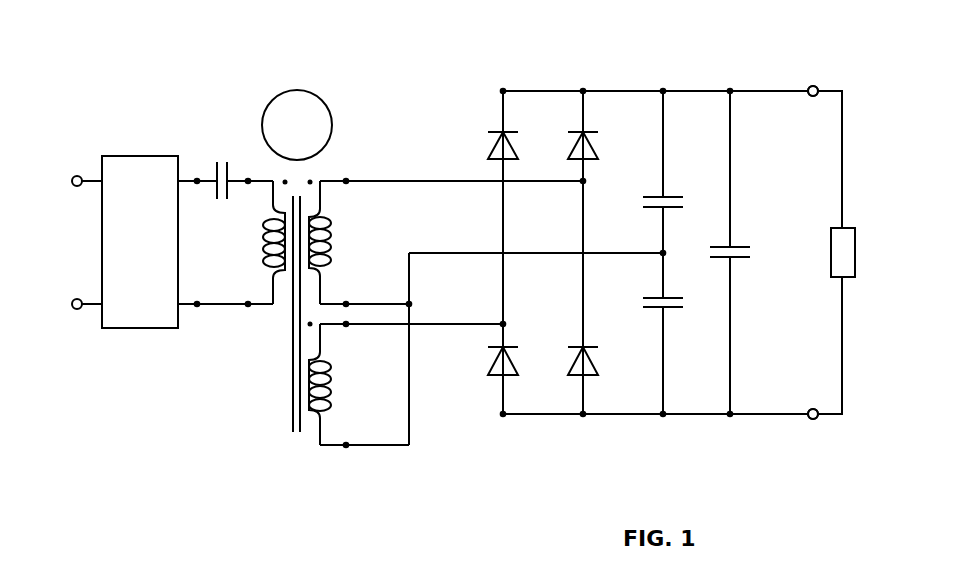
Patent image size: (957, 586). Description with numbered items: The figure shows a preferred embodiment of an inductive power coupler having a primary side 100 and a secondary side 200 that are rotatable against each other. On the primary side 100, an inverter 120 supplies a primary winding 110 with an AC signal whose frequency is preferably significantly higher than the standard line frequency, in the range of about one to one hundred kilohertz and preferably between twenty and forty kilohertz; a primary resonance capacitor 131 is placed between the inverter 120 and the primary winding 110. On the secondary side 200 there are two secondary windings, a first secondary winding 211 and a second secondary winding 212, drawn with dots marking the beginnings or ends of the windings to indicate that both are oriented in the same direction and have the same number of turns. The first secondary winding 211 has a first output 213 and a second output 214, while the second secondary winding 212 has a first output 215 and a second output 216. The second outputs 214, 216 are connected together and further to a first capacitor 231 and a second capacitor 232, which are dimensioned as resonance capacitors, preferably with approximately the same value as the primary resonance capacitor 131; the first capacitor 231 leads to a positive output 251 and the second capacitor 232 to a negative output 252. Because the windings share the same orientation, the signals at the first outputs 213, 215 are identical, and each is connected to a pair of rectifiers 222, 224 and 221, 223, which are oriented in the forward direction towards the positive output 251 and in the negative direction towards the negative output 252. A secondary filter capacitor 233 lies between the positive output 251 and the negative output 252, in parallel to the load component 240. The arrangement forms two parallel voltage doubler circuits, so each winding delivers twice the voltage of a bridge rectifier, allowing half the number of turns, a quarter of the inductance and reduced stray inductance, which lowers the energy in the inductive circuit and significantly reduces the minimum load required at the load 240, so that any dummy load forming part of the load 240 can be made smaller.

The primary side 100 is at (206, 81).
The secondary side 200 is at (388, 83).
The primary winding 110 is at (263, 225).
The inverter 120 is at (138, 181).
The primary resonance capacitor 131 is at (215, 163).
The first secondary winding 211 is at (331, 223).
The second secondary winding 212 is at (331, 404).
The first output of first secondary winding 213 is at (347, 182).
The second output of first secondary winding 214 is at (347, 303).
The first output of second secondary winding 215 is at (347, 326).
The second output of second secondary winding 216 is at (347, 446).
The rectifier 221 is at (490, 150).
The rectifier 222 is at (596, 150).
The rectifier 223 is at (490, 365).
The rectifier 224 is at (596, 365).
The first capacitor 231 is at (670, 196).
The second capacitor 232 is at (670, 309).
The secondary filter capacitor 233 is at (735, 246).
The load component 240 is at (830, 252).
The positive output 251 is at (813, 97).
The negative output 252 is at (813, 408).